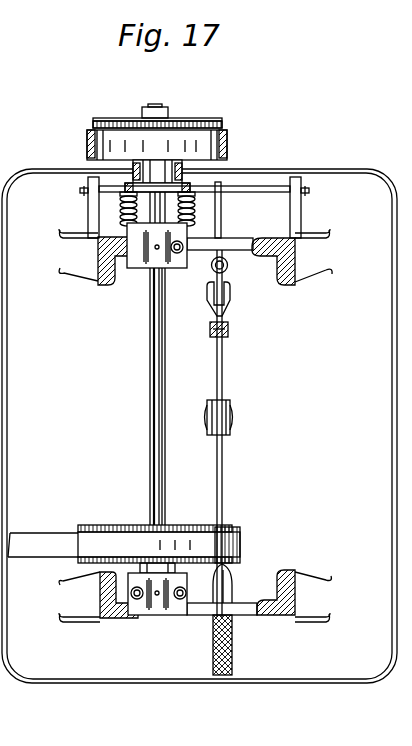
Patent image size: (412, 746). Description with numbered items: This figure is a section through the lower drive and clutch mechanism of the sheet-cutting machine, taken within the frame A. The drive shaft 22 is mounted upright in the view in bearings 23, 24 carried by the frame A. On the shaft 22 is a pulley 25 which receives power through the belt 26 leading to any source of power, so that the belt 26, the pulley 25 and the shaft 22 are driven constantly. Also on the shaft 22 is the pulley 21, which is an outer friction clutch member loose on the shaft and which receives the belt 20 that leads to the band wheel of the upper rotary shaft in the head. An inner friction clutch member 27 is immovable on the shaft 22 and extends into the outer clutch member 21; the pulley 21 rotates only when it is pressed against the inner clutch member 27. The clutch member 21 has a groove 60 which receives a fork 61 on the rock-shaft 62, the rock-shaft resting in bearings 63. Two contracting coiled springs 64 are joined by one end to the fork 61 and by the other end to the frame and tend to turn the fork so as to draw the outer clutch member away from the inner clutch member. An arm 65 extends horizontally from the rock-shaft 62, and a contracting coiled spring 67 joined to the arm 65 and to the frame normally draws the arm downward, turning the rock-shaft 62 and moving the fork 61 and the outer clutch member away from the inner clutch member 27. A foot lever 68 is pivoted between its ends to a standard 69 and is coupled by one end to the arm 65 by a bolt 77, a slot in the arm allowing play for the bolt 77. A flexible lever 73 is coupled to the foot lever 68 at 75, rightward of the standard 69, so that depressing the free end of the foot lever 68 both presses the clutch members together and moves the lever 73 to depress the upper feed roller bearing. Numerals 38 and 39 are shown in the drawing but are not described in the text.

The frame A is at (199, 426).
The belt 20 is at (227, 143).
The pulley 21 is at (170, 127).
The inner friction clutch member 27 is at (130, 118).
The hub 38 is at (133, 176).
The hub bearing ring 39 is at (183, 168).
The groove 60 is at (177, 185).
The fork 61 is at (125, 195).
The rock-shaft 62 is at (270, 191).
The bearings 63 is at (302, 184).
The contracting coiled springs 64 is at (120, 213).
The arm 65 is at (221, 218).
The bearing 23 is at (179, 266).
The drive shaft 22 is at (150, 411).
The contracting coiled spring 67 is at (228, 265).
The bolt 77 is at (231, 290).
The lever 73 is at (229, 325).
The coupling point 75 is at (212, 337).
The standard 69 is at (233, 410).
The pulley 25 is at (130, 525).
The belt 26 is at (37, 537).
The bearing 24 is at (185, 588).
The foot lever 68 is at (233, 641).